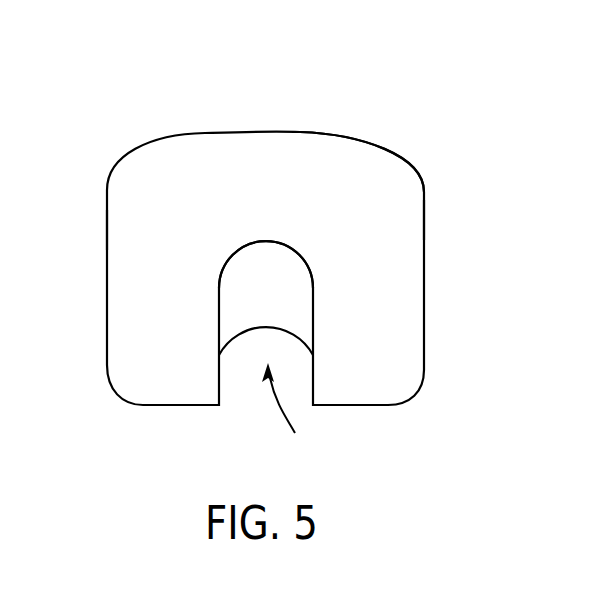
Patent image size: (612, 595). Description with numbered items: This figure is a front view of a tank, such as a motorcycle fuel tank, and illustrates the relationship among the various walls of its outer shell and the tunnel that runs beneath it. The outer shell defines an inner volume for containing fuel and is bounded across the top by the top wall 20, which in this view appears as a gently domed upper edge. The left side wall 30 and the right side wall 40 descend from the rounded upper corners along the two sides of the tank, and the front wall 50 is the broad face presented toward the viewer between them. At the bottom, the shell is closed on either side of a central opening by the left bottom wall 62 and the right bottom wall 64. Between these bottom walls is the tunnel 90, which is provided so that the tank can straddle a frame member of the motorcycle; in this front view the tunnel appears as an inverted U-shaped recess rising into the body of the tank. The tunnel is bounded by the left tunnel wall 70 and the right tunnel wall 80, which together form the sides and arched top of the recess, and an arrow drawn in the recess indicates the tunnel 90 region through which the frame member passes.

The top wall 20 is at (262, 130).
The left side wall 30 is at (424, 218).
The right side wall 40 is at (106, 228).
The front wall 50 is at (375, 294).
The left bottom wall 62 is at (357, 405).
The right bottom wall 64 is at (163, 405).
The left tunnel wall 70 is at (312, 287).
The right tunnel wall 80 is at (221, 288).
The tunnel 90 is at (283, 414).